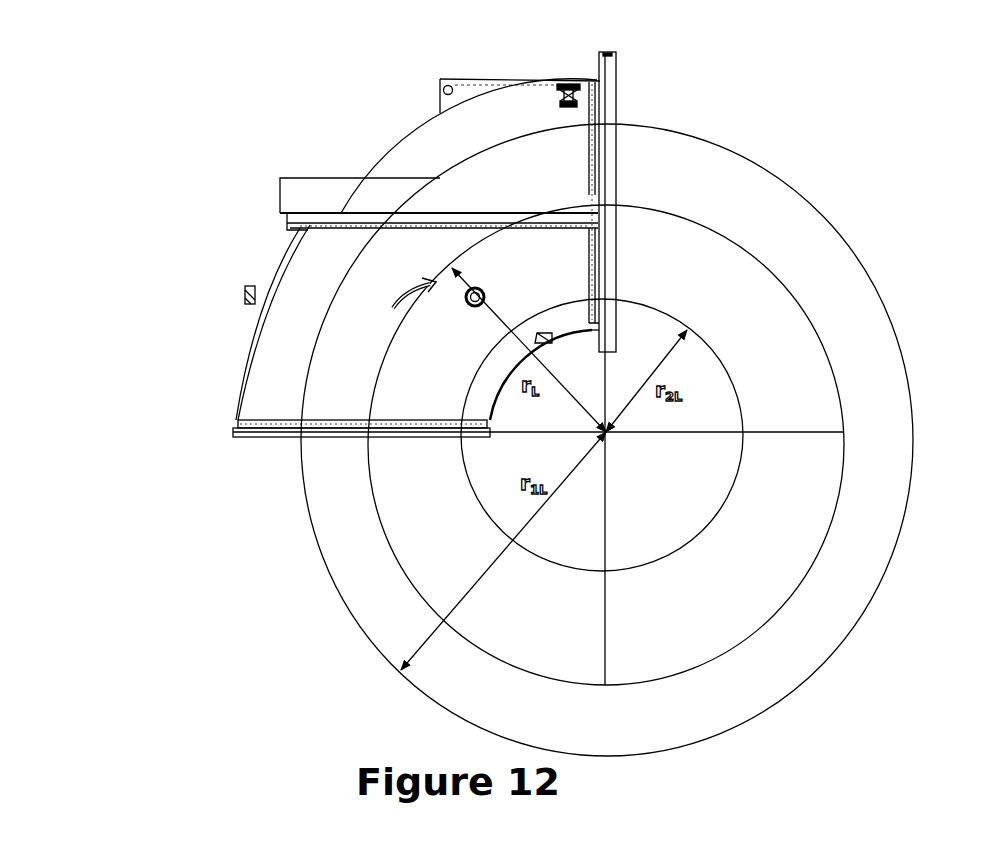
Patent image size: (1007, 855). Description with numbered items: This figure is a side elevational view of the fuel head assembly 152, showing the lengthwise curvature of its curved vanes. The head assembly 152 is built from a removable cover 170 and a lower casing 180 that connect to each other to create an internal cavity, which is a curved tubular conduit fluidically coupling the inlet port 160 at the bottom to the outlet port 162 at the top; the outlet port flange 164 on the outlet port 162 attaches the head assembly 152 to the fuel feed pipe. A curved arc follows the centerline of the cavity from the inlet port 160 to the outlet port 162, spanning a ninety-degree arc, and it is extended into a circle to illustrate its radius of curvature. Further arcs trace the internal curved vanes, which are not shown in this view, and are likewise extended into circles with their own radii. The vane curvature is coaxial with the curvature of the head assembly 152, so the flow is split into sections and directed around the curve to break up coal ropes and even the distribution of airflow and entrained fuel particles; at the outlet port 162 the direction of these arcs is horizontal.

The head assembly 152 is at (251, 144).
The inlet port 160 is at (282, 440).
The outlet port 162 is at (619, 117).
The outlet port flange 164 is at (618, 63).
The removable cover 170 is at (418, 131).
The lower casing 180 is at (247, 331).